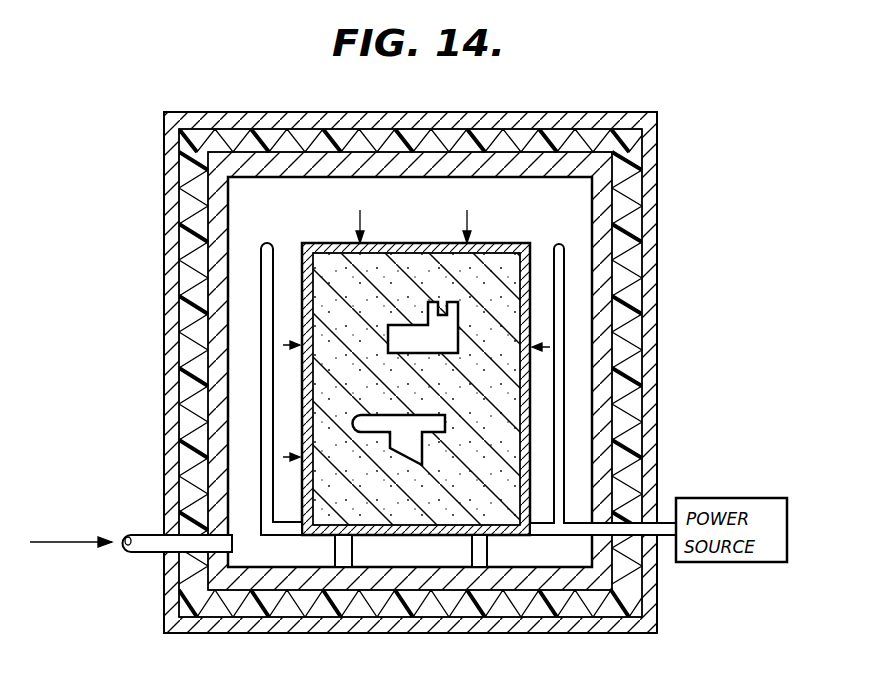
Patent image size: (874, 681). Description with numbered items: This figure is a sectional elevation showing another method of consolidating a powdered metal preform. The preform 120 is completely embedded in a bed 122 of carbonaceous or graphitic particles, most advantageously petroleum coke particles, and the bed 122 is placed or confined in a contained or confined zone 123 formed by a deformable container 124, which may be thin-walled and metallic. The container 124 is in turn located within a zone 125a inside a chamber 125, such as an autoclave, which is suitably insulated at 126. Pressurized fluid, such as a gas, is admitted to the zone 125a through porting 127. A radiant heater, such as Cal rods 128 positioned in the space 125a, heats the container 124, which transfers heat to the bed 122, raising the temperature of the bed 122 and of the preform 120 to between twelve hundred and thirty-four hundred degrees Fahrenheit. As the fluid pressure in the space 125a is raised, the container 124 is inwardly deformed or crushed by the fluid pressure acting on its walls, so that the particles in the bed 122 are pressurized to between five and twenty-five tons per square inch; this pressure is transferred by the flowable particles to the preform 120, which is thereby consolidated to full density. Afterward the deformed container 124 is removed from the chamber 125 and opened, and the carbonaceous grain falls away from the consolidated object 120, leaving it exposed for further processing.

The preform 120 is at (403, 417).
The bed 122 is at (488, 388).
The contained zone 123 is at (525, 425).
The deformable container 124 is at (530, 286).
The chamber 125 is at (643, 195).
The zone 125a is at (575, 340).
The insulation 126 is at (630, 232).
The porting 127 is at (140, 552).
The Cal rod 128 is at (262, 386).